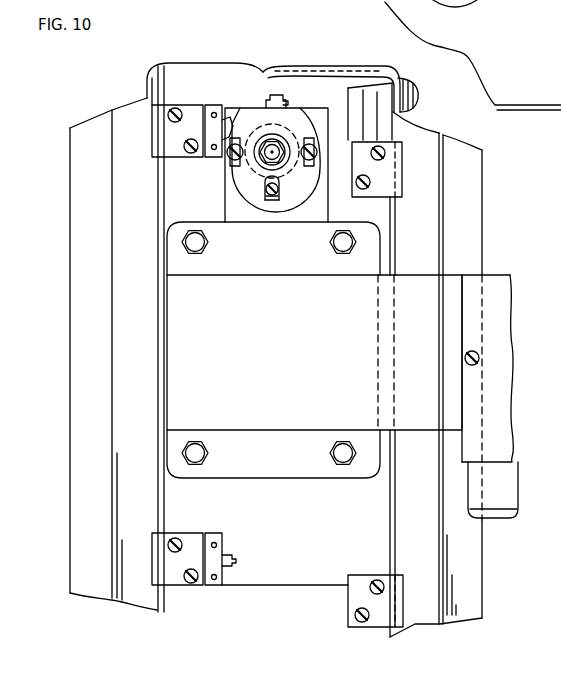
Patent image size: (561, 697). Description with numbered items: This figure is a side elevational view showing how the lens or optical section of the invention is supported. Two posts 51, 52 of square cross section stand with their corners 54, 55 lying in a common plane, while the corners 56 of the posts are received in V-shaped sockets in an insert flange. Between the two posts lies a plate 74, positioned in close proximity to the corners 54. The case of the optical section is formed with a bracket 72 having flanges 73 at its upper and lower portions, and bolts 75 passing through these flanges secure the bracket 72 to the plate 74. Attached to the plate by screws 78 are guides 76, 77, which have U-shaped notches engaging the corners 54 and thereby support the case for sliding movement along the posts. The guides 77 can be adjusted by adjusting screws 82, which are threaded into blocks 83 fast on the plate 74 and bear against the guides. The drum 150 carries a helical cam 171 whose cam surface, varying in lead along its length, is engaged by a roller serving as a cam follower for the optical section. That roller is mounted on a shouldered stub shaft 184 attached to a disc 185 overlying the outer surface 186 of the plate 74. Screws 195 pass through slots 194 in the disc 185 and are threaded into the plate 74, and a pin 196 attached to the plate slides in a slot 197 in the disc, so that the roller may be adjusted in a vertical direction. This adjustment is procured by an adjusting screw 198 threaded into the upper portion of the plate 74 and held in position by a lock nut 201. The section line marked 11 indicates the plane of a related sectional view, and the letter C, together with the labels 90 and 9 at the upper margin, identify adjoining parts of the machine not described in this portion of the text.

The drum 150 is at (150, 90).
The adjusting screw 198 is at (274, 92).
The lock nut 201 is at (286, 104).
The helical cam 171 is at (414, 98).
The post 51 is at (100, 343).
The corner 55 is at (478, 202).
The corner 56 is at (110, 405).
The corner 54 is at (163, 447).
The post 52 is at (468, 243).
The flange 73 is at (372, 240).
The bracket 72 is at (386, 292).
The plate 74 is at (273, 586).
The bolt 75 is at (196, 256).
The section line 11- 11 is at (270, 52).
The guide 77 is at (172, 135).
The block 83 is at (213, 105).
The adjusting screw 82 is at (244, 118).
The guide 76 is at (388, 180).
The screw 78 is at (178, 110).
The outer surface 186 is at (180, 211).
The shouldered stub shaft 184 is at (276, 155).
The screw 195 is at (313, 147).
The slot 194 is at (237, 168).
The disc 185 is at (258, 200).
The pin 196 is at (284, 198).
The slot 197 is at (272, 200).
The clamp C is at (506, 282).
The upper body 90 is at (517, 0).
The upper element 9 is at (556, 20).